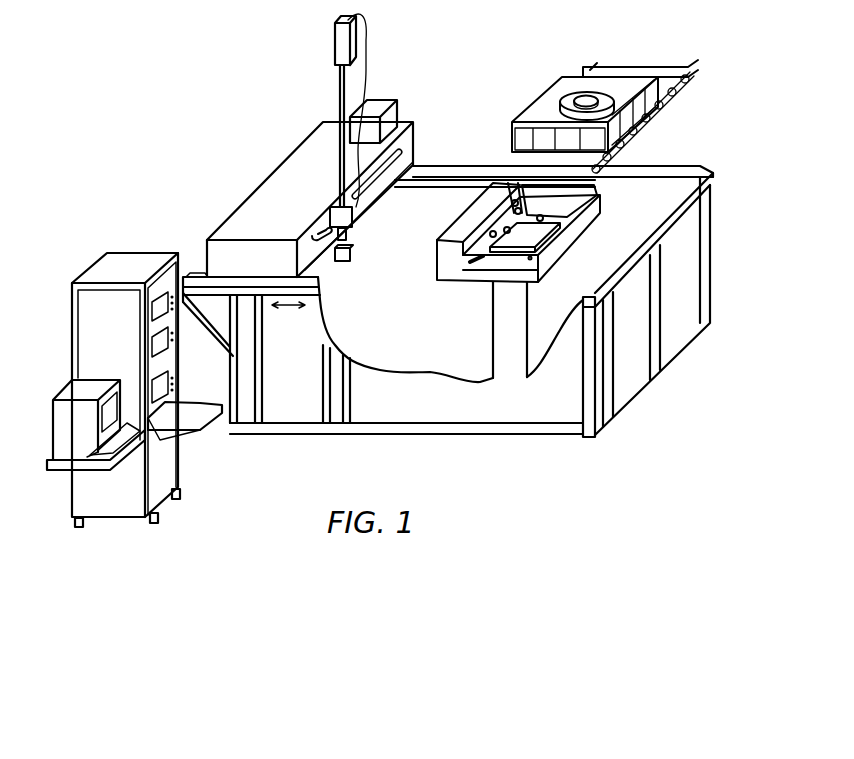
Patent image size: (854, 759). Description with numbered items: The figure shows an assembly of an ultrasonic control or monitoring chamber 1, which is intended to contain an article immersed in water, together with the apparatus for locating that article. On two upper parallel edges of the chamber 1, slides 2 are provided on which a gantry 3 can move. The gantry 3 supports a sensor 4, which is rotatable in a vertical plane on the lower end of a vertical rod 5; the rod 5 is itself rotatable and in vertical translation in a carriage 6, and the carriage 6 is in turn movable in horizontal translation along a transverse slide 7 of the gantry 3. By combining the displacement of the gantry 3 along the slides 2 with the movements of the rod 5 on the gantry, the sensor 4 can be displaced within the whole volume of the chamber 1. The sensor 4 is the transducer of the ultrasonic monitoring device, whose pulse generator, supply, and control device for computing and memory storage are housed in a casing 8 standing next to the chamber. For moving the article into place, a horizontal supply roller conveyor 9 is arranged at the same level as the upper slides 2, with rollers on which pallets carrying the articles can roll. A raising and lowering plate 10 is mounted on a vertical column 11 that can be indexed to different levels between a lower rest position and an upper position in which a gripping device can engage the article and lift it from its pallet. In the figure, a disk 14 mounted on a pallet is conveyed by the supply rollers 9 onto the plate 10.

The ultrasonic monitoring chamber 1 is at (680, 250).
The slides 2 is at (196, 277).
The gantry 3 is at (247, 207).
The sensor 4 is at (350, 257).
The vertical rod 5 is at (350, 238).
The carriage 6 is at (355, 221).
The transverse slide 7 is at (318, 233).
The casing 8 is at (90, 330).
The supply roller conveyor 9 is at (676, 84).
The raising and lowering plate 10 is at (447, 272).
The vertical column 11 is at (495, 336).
The disk 14 is at (563, 95).